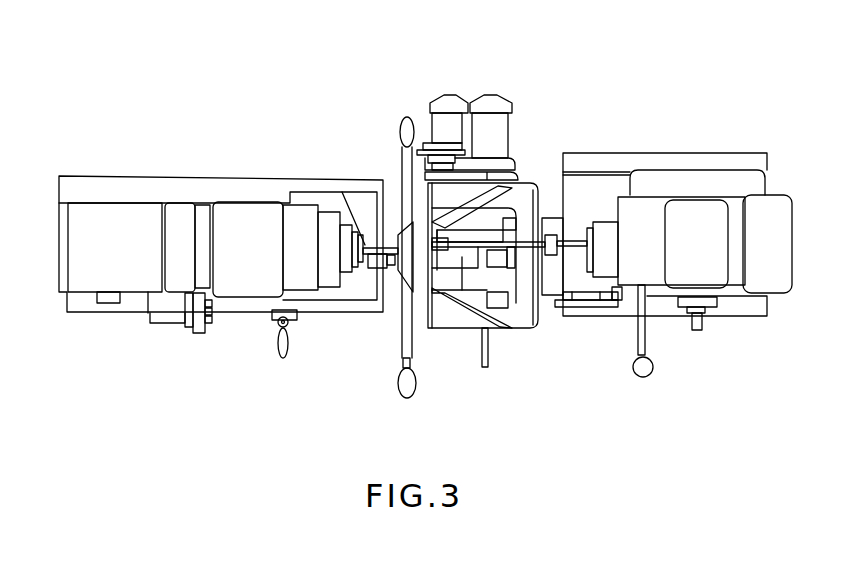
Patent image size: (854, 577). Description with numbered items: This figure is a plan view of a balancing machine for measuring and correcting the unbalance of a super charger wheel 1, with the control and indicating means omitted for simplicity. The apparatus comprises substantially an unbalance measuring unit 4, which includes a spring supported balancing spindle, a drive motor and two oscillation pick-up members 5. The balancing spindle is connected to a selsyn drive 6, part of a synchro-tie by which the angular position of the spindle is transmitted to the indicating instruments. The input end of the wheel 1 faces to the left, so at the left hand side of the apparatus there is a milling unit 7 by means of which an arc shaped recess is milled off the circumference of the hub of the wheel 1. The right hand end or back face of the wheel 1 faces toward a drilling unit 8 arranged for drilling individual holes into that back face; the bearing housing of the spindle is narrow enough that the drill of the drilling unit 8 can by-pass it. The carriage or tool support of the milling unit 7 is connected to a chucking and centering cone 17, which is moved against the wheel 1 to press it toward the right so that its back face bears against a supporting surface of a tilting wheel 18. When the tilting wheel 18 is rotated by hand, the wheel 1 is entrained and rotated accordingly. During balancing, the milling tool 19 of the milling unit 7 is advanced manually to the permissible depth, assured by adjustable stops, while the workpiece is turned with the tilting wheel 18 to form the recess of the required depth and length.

The wheel 1 is at (405, 282).
The unbalance measuring unit 4 is at (463, 262).
The oscillation pick-up members 5 is at (498, 123).
The selsyn drive 6 is at (522, 258).
The milling unit 7 is at (303, 225).
The drilling unit 8 is at (637, 235).
The chucking and centering cone 17 is at (379, 268).
The tilting wheel 18 is at (407, 340).
The milling tool 19 is at (392, 228).